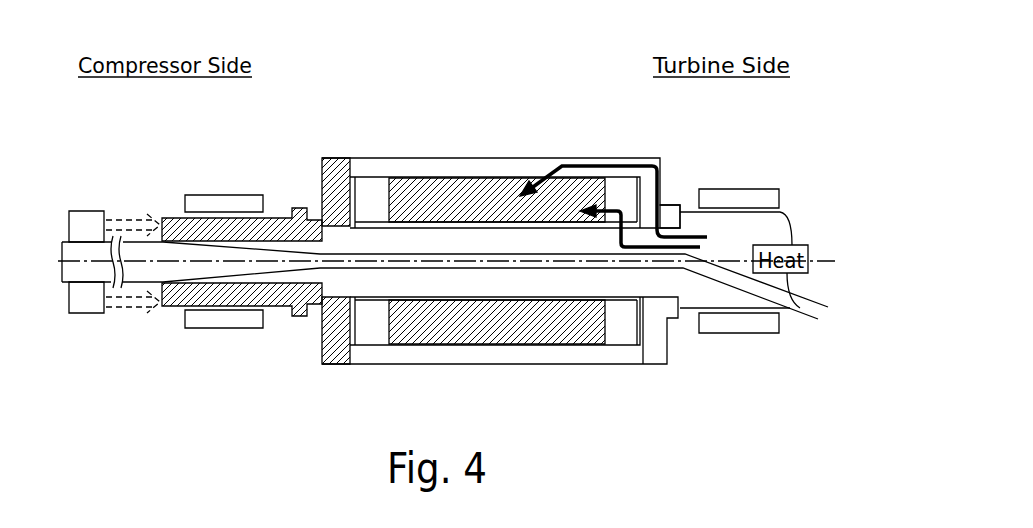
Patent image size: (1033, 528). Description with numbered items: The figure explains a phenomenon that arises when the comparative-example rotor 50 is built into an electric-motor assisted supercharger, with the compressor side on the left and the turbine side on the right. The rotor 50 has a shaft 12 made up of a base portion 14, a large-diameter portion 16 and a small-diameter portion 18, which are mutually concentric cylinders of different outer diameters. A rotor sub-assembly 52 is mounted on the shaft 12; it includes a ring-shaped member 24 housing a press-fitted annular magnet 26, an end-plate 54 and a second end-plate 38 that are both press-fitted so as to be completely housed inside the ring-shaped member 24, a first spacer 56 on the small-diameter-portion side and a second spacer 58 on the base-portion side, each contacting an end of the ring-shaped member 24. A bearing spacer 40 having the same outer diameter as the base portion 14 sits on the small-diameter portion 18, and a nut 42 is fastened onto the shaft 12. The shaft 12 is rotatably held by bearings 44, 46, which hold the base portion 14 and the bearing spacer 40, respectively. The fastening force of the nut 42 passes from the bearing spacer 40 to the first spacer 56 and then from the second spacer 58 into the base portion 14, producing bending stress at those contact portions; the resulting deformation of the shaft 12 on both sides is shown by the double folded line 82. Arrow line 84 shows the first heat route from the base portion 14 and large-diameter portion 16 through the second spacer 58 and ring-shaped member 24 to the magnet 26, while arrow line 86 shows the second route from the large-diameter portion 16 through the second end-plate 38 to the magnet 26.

The shaft 12 is at (333, 218).
The base portion 14 is at (688, 302).
The large-diameter portion 16 is at (303, 212).
The small-diameter portion 18 is at (138, 250).
The ring-shaped member 24 is at (427, 168).
The magnet 26 is at (482, 195).
The second end-plate 38 is at (622, 335).
The bearing spacer 40 is at (295, 316).
The nut 42 is at (87, 303).
The bearing 44 is at (762, 335).
The bearing 46 is at (203, 328).
The rotor 50 is at (285, 62).
The rotor sub-assembly 52 is at (333, 158).
The end-plate 54 is at (377, 332).
The first spacer 56 is at (333, 355).
The second spacer 58 is at (655, 352).
The double folded line 82 is at (473, 268).
The arrow line 84 is at (658, 232).
The arrow line 86 is at (703, 250).